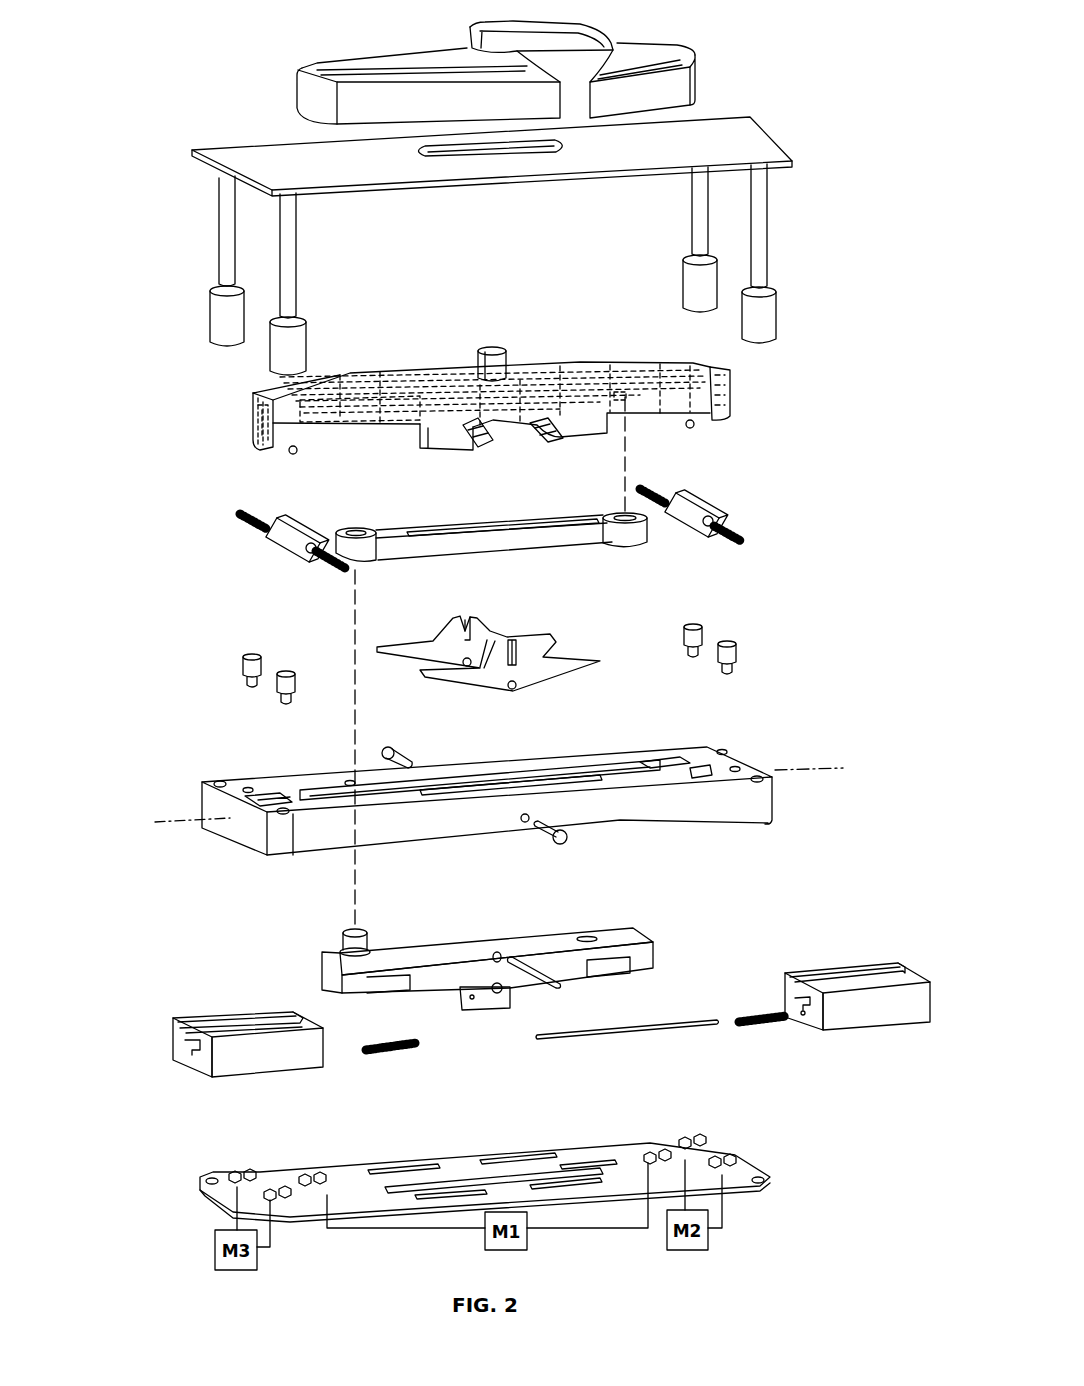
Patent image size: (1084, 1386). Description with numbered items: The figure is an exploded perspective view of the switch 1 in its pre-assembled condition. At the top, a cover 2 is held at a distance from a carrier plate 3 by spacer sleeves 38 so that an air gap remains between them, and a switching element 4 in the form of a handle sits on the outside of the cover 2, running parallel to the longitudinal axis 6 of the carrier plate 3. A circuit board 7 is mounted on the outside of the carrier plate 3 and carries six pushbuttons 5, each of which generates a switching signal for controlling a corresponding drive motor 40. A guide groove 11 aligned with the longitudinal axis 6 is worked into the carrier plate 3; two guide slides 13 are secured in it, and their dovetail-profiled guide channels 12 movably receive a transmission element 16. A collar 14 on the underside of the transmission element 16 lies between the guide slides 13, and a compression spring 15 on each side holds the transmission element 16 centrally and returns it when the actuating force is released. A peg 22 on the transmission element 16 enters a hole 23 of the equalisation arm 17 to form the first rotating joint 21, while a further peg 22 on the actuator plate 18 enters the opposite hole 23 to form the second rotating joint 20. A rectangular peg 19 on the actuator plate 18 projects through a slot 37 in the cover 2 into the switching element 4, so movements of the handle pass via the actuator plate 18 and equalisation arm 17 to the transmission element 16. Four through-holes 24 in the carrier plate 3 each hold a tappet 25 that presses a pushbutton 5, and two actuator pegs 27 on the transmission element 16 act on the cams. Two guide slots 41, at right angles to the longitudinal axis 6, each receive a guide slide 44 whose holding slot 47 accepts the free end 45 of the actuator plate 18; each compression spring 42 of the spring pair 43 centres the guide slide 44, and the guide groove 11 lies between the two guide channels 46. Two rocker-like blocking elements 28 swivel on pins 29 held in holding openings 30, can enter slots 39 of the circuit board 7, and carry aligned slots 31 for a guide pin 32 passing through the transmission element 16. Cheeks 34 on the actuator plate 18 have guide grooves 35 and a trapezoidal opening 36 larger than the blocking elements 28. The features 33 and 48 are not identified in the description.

The switch 1 is at (750, 30).
The cover 2 is at (485, 156).
The carrier plate 3 is at (489, 747).
The switching element 4 is at (665, 85).
The pushbutton 5 is at (492, 1183).
The longitudinal axis 6 is at (177, 814).
The circuit board 7 is at (750, 1170).
The guide groove 11 is at (430, 783).
The guide channel 12 is at (220, 1025).
The guide slide 13 is at (522, 1043).
The collar 14 is at (513, 1010).
The compression spring 15 is at (363, 1048).
The transmission element 16 is at (490, 990).
The equalisation arm 17 is at (489, 551).
The actuator plate 18 is at (489, 394).
The peg 19 is at (492, 363).
The second rotating joint 20 is at (645, 473).
The first rotating joint 21 is at (340, 913).
The peg 22 is at (620, 397).
The hole 23 is at (637, 517).
The through-hole 24 is at (727, 775).
The tappet 25 is at (693, 635).
The actuator peg 27 is at (292, 448).
The blocking element 28 is at (623, 625).
The pin 29 is at (565, 838).
The holding opening 30 is at (529, 818).
The slot 31 is at (475, 618).
The guide pin 32 is at (613, 935).
The pin 33 is at (527, 968).
The cheek 34 is at (427, 420).
The guide groove 35 is at (443, 430).
The trapezoidal opening 36 is at (550, 430).
The slot 37 is at (490, 150).
The spacer sleeve 38 is at (222, 325).
The slot 39 is at (387, 1170).
The drive motor 40 is at (222, 1235).
The guide slot 41 is at (580, 785).
The compression spring 42 is at (738, 534).
The spring pair 43 is at (313, 568).
The guide slide 44 is at (700, 509).
The free end 45 is at (277, 426).
The guide channel 46 is at (707, 773).
The holding slot 47 is at (233, 532).
The axis 48 is at (626, 425).